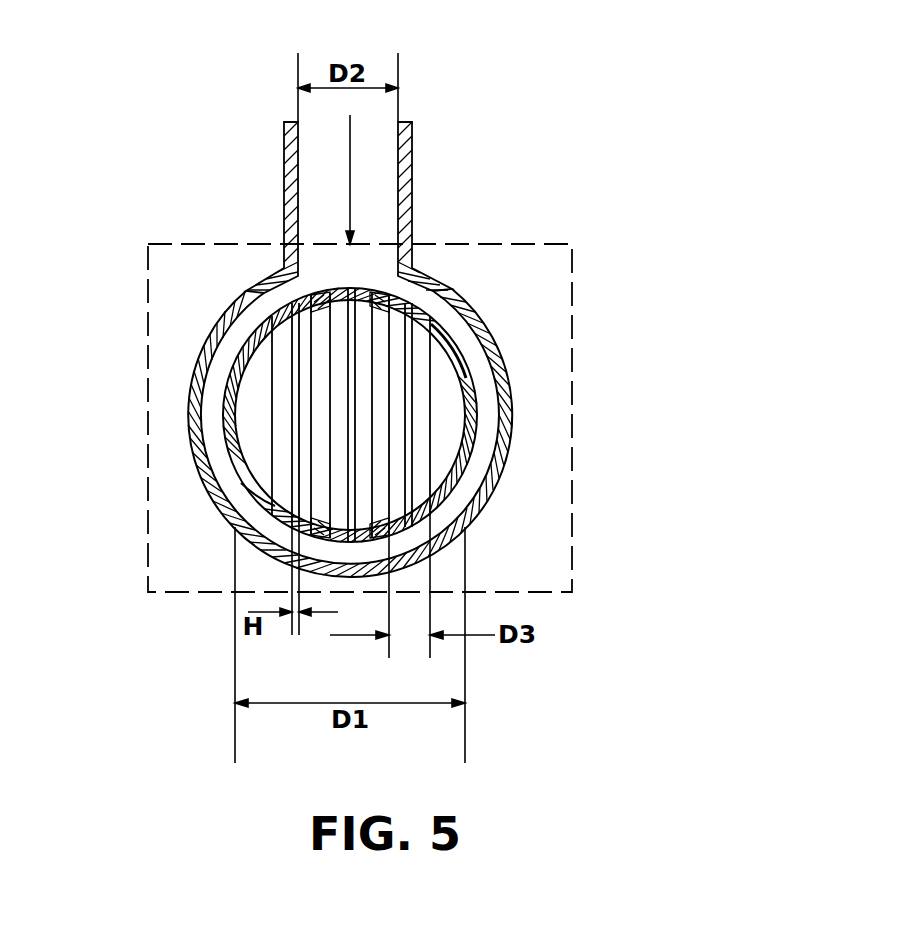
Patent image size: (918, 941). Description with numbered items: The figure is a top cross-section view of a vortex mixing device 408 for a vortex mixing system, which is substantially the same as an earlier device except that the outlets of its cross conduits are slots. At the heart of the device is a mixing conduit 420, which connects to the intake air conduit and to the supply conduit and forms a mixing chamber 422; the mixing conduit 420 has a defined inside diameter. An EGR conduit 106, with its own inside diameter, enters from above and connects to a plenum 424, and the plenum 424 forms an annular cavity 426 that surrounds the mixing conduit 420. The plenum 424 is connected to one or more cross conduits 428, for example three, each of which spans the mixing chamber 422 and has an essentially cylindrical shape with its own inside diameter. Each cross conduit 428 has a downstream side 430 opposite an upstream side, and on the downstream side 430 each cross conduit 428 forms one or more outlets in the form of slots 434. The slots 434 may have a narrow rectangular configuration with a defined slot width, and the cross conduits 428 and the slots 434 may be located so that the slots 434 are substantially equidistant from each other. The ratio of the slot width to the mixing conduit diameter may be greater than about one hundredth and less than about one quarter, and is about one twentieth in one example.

The EGR conduit 106 is at (413, 167).
The vortex mixing device 408 is at (487, 244).
The mixing conduit 420 is at (474, 383).
The mixing chamber 422 is at (447, 416).
The plenum 424 is at (197, 468).
The annular cavity 426 is at (213, 388).
The cross conduit 428 is at (284, 322).
The downstream side 430 is at (418, 442).
The slot 434 is at (413, 490).